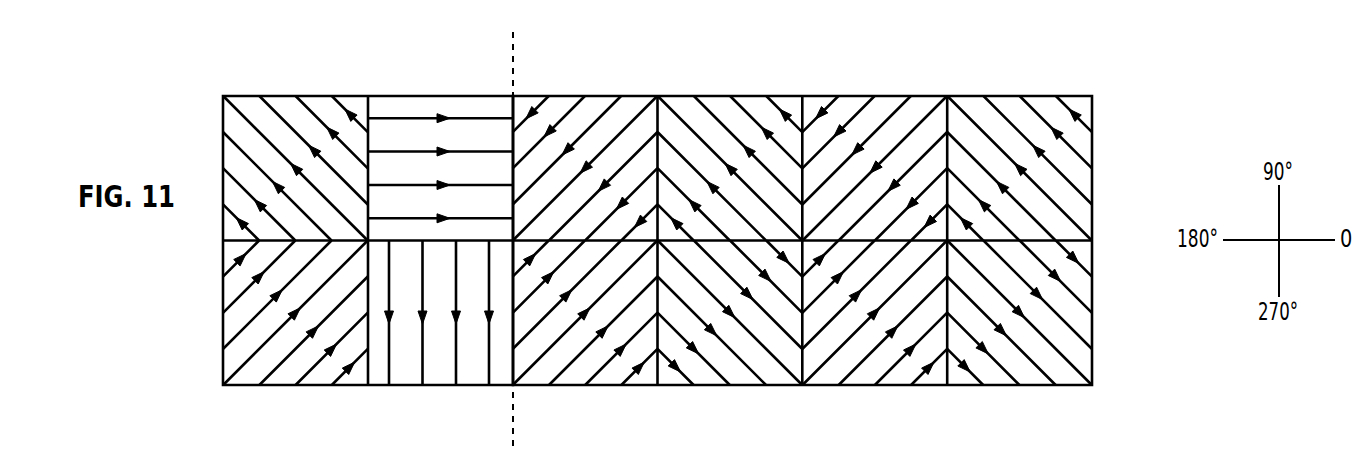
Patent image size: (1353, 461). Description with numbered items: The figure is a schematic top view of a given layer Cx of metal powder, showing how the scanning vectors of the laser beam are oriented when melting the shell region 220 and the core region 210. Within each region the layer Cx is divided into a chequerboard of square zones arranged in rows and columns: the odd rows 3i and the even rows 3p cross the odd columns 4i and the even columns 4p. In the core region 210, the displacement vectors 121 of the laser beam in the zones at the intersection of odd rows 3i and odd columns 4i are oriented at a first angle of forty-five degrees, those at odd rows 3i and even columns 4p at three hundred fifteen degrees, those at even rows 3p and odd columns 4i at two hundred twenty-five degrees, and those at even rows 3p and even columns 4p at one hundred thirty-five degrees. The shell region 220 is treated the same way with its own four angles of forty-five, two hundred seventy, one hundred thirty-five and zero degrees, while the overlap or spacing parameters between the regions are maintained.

The shell region 220 is at (327, 227).
The core region 210 is at (802, 235).
The displacement vectors 121 is at (602, 113).
The even rows 3p is at (327, 134).
The odd rows 3i is at (319, 344).
The odd columns 4i is at (730, 351).
The even columns 4p is at (870, 351).
The layer Cx is at (1118, 228).